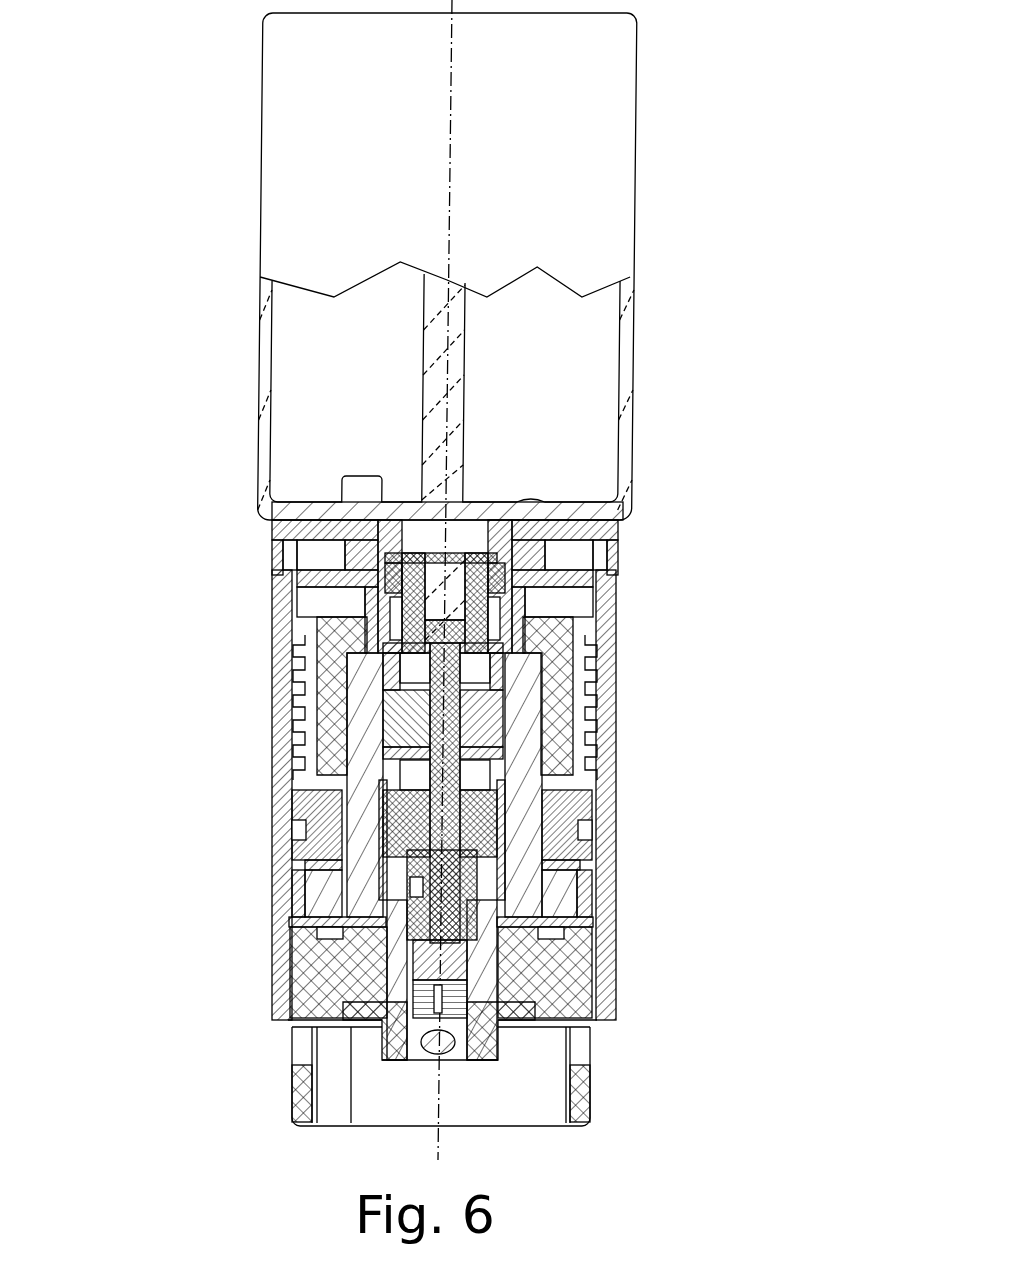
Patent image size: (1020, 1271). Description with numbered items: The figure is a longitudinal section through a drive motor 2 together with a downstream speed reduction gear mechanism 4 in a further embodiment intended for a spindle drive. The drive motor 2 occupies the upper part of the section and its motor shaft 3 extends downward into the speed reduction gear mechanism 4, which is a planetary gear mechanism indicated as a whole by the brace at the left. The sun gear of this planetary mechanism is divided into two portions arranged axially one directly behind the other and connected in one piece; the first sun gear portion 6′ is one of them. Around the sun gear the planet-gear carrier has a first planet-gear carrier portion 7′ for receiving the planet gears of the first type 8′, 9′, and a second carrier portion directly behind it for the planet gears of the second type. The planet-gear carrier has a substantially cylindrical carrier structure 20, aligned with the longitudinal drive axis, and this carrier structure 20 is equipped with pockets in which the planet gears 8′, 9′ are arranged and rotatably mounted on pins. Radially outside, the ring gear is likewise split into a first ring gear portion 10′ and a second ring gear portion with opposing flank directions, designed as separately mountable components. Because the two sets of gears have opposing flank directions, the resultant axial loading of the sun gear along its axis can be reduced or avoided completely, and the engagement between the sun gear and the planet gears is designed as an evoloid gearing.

The drive motor 2 is at (557, 237).
The motor shaft 3 is at (620, 530).
The speed reduction gear mechanism 4 is at (99, 519).
The first sun gear portion 6′ is at (615, 893).
The first planet-gear carrier portion 7′ is at (615, 875).
The planet gear of the first type 8′ is at (267, 823).
The planet gear of the first type 9′ is at (615, 835).
The first ring gear portion 10′ is at (615, 805).
The cylindrical carrier structure 20 is at (615, 935).